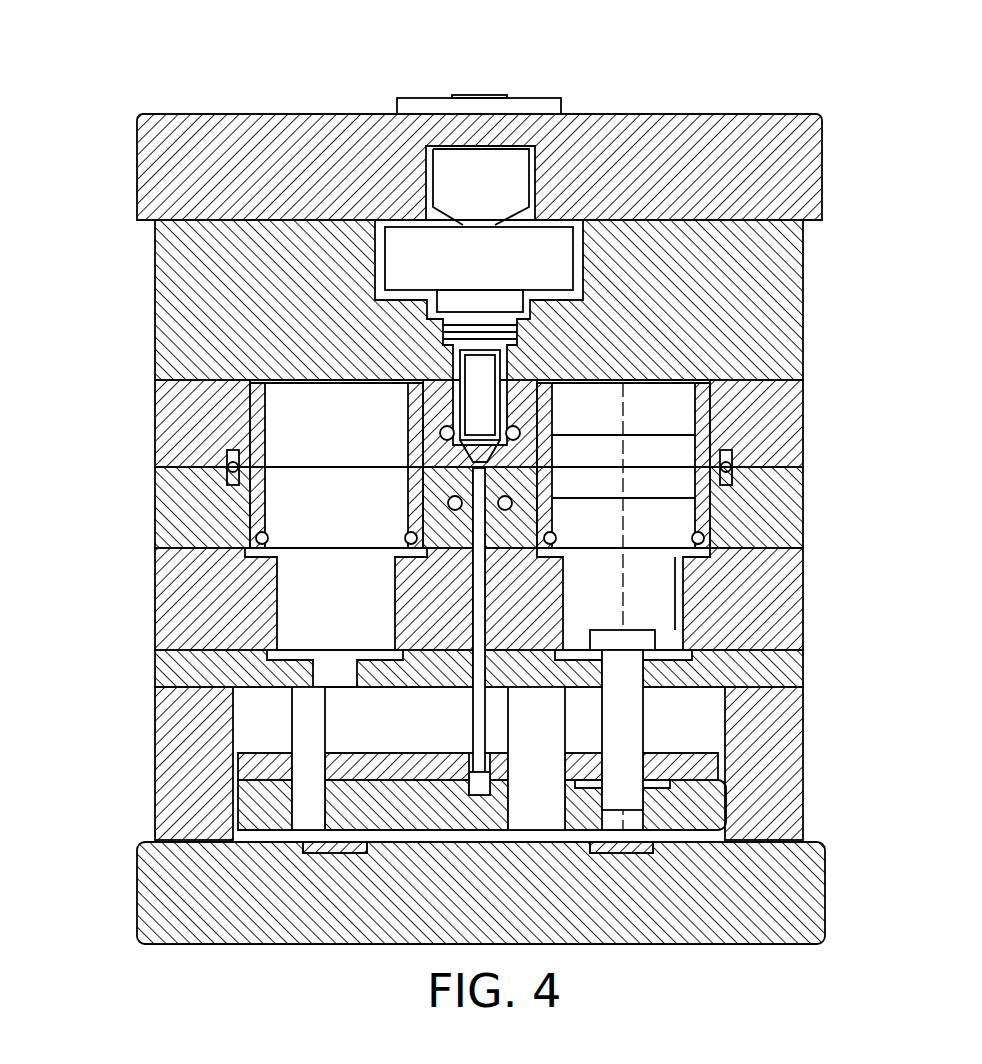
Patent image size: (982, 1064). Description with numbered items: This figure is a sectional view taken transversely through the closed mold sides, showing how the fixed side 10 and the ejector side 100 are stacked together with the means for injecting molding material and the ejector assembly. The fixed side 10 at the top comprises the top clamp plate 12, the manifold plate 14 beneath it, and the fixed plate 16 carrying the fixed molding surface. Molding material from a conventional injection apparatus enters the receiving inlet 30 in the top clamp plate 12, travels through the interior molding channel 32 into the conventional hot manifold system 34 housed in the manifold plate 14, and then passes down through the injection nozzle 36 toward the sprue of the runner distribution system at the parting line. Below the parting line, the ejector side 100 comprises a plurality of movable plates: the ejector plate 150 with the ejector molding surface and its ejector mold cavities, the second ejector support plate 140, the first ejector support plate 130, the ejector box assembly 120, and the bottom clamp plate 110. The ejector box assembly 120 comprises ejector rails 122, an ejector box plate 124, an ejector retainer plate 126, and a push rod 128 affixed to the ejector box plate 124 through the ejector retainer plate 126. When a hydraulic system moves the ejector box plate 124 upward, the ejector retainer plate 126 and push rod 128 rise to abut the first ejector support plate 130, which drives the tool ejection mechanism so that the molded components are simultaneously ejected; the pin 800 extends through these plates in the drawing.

The fixed side 10 is at (520, 266).
The top clamp plate 12 is at (786, 114).
The manifold plate 14 is at (803, 291).
The fixed plate 16 is at (803, 424).
The receiving inlet 30 is at (500, 95).
The interior molding channel 32 is at (481, 187).
The hot manifold system 34 is at (479, 283).
The injection nozzle 36 is at (417, 423).
The ejector side 100 is at (476, 705).
The bottom clamp plate 110 is at (137, 890).
The ejector box assembly 120 is at (438, 735).
The ejector rails 122 is at (233, 737).
The ejector box plate 124 is at (700, 803).
The ejector retainer plate 126 is at (730, 757).
The push rod 128 is at (603, 722).
The first ejector support plate 130 is at (155, 665).
The second ejector support plate 140 is at (155, 596).
The ejector plate 150 is at (155, 505).
The ejector pin 800 is at (472, 712).